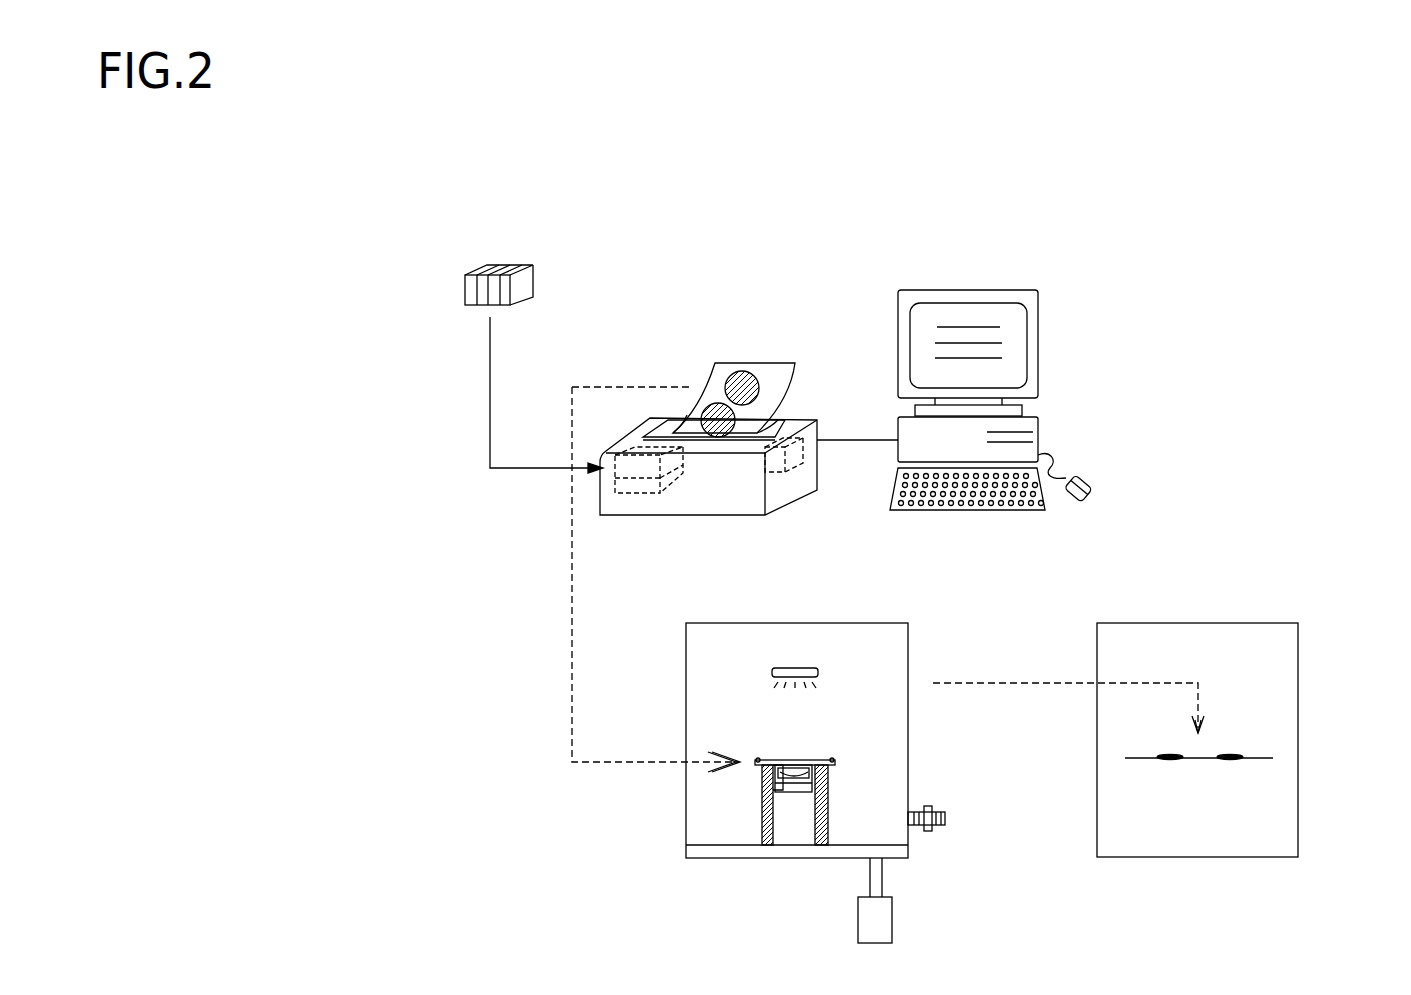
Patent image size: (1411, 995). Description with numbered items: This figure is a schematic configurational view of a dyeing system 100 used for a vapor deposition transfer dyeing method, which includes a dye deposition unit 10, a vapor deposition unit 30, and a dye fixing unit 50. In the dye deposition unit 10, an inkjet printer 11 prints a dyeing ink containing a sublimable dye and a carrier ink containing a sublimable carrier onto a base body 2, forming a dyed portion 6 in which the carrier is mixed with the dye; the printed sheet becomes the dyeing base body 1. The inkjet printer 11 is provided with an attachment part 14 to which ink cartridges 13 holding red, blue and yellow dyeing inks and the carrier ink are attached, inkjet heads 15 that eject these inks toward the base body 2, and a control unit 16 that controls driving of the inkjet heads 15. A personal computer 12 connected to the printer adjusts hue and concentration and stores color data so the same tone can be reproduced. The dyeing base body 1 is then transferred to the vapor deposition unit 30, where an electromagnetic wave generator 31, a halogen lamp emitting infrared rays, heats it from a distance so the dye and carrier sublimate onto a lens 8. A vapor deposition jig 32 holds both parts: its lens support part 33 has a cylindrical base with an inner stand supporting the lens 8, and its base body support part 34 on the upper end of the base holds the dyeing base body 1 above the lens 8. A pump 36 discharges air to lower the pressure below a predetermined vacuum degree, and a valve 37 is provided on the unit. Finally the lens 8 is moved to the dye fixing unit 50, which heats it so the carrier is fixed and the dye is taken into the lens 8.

The dyeing system 100 is at (931, 180).
The dye deposition unit 10 is at (826, 255).
The dyeing base body 1 is at (752, 353).
The base body 2 is at (775, 380).
The dyed portion 6 is at (727, 381).
The inkjet printer 11 is at (730, 495).
The personal computer 12 is at (1030, 415).
The ink cartridge 13 is at (530, 275).
The attachment part 14 is at (648, 470).
The inkjet heads 15 is at (626, 490).
The control unit 16 is at (802, 457).
The vapor deposition unit 30 is at (908, 635).
The electromagnetic wave generator 31 is at (803, 668).
The vapor deposition jig 32 is at (840, 803).
The lens support part 33 is at (830, 773).
The base body support part 34 is at (760, 770).
The pump 36 is at (880, 920).
The valve 37 is at (923, 810).
The dye fixing unit 50 is at (1298, 633).
The lens 8 is at (790, 785).